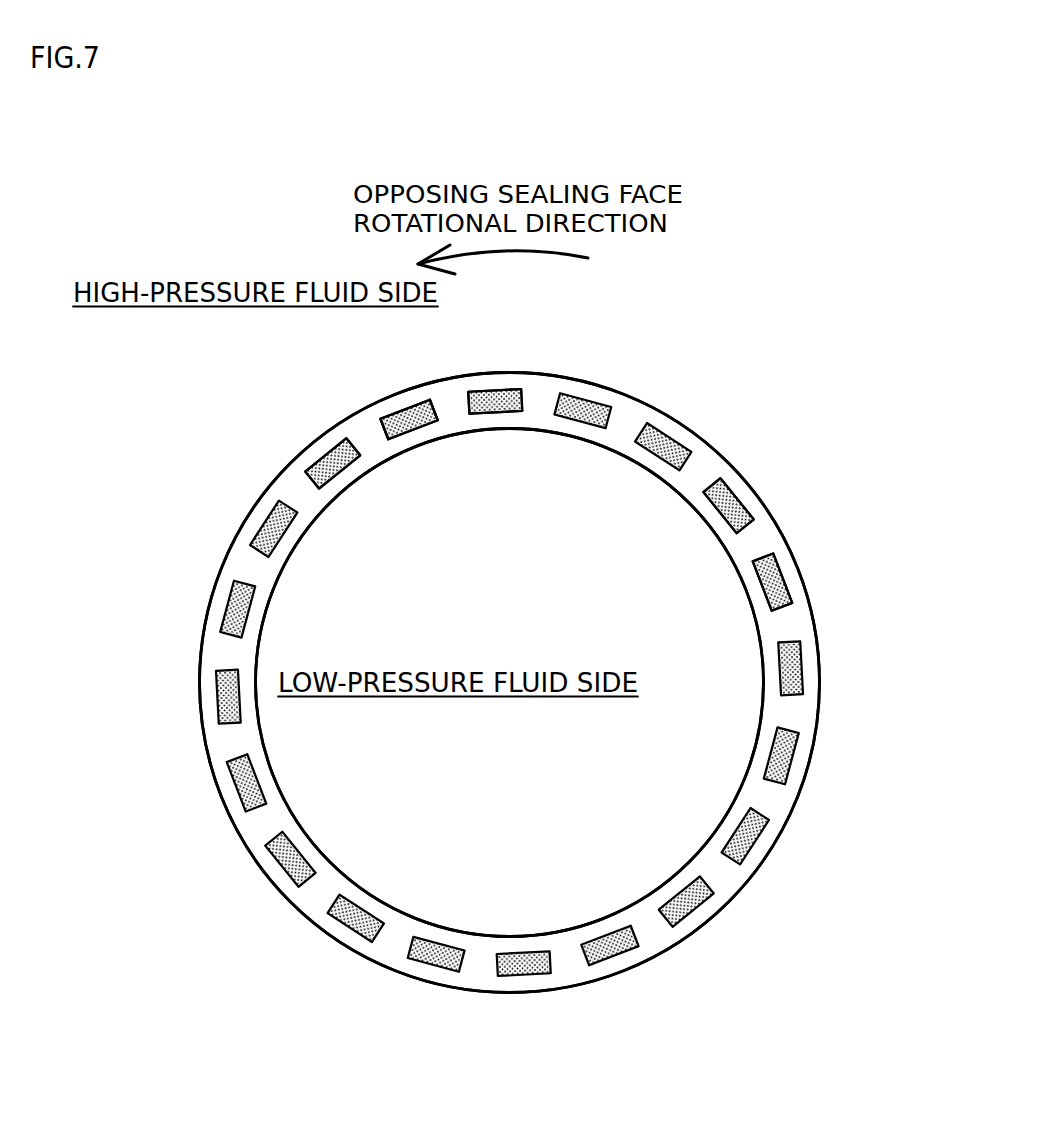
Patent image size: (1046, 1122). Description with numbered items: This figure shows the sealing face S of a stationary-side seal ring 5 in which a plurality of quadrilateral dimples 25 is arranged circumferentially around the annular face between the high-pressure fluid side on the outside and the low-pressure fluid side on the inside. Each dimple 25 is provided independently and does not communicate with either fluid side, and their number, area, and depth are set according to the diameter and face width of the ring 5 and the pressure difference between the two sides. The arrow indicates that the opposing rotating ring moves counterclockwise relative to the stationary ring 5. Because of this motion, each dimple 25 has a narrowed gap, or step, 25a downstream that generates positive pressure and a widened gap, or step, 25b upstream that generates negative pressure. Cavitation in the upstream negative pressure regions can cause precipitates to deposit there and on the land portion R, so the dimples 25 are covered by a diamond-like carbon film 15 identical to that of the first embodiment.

The stationary-side seal ring 5 is at (633, 398).
The sealing face S is at (697, 453).
The land portion R is at (587, 433).
The diamond-like carbon film 15 is at (327, 460).
The dimple 25 is at (315, 458).
The narrowed gap (step) 25a is at (383, 433).
The widened gap (step) 25b is at (423, 425).